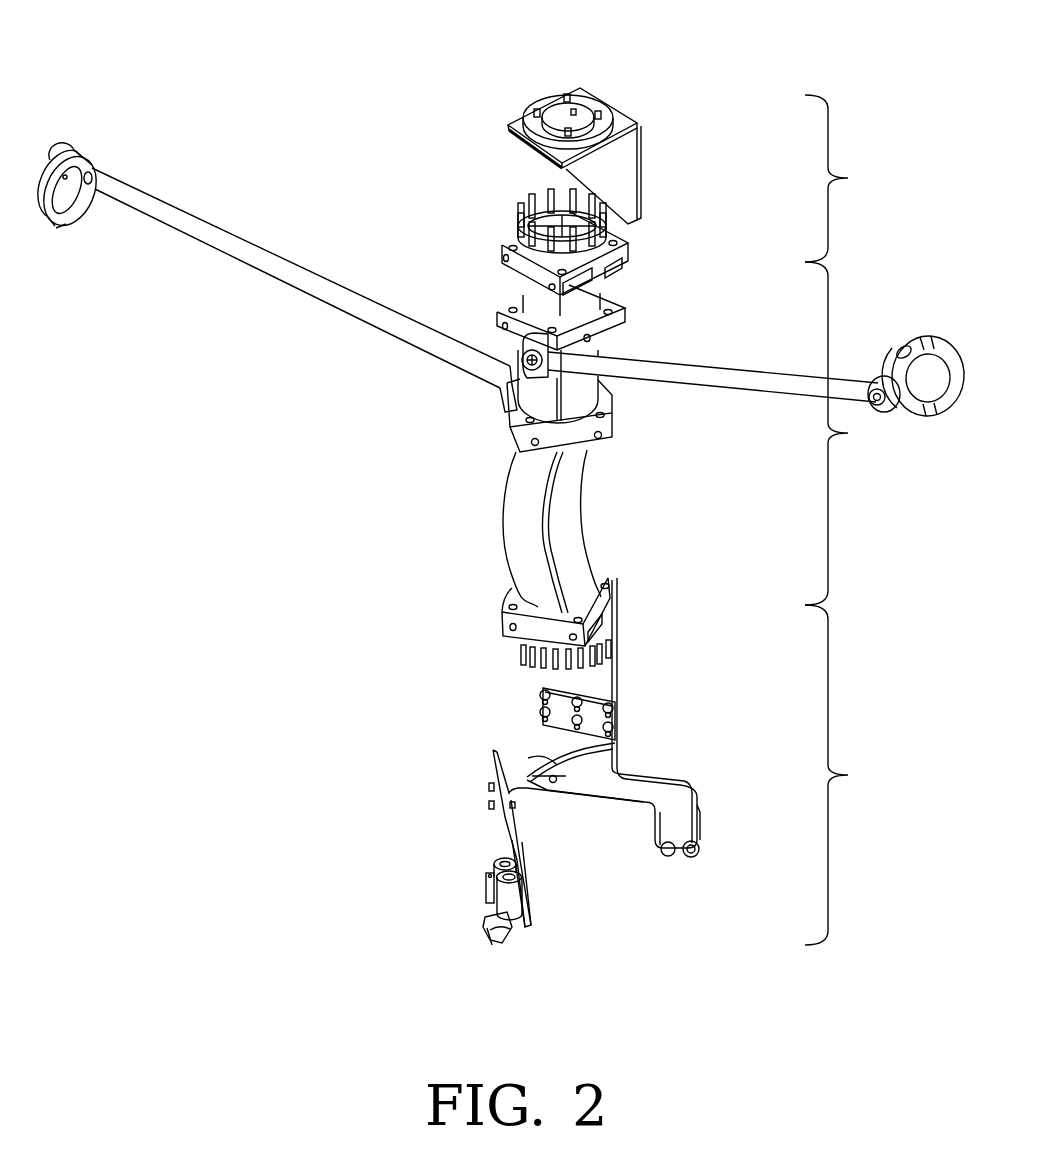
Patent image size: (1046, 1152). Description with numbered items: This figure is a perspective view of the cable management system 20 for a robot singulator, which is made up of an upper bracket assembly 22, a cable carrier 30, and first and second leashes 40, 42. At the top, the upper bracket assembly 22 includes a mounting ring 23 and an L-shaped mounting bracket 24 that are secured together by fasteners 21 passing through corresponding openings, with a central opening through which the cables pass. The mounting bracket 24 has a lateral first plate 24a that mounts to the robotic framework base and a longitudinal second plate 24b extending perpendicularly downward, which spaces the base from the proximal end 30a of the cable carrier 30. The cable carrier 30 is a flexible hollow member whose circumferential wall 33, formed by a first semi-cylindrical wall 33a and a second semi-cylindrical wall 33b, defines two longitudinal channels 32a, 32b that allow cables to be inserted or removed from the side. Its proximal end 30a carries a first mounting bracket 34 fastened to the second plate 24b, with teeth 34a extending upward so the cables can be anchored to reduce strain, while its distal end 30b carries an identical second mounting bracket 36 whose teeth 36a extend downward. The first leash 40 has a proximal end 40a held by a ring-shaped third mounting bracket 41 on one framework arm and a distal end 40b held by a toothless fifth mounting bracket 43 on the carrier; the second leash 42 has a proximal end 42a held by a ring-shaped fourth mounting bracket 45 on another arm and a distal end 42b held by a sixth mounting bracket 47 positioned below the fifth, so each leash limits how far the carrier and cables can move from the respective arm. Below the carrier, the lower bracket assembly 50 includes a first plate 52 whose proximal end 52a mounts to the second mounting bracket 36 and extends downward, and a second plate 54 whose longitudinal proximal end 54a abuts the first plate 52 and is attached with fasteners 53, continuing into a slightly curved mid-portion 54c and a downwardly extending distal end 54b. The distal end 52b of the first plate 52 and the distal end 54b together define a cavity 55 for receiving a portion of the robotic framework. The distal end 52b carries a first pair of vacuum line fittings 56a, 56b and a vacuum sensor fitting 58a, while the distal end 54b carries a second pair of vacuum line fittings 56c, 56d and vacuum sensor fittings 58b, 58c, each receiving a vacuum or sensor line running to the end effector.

The cable management system 20 is at (187, 97).
The fasteners 21 is at (533, 110).
The upper bracket assembly 22 is at (845, 178).
The mounting ring 23 is at (585, 100).
The mounting bracket 24 is at (665, 132).
The first plate 24a is at (515, 135).
The second plate 24b is at (622, 200).
The cable carrier 30 is at (847, 433).
The proximal end 30a is at (628, 278).
The distal end 30b is at (622, 592).
The longitudinal channel 32a is at (560, 210).
The longitudinal channel 32b is at (508, 588).
The circumferential wall 33 is at (587, 500).
The first semi-cylindrical wall 33a is at (515, 502).
The second semi-cylindrical wall 33b is at (590, 567).
The first mounting bracket 34 is at (512, 270).
The teeth 34a is at (522, 227).
The second mounting bracket 36 is at (517, 645).
The teeth 36a is at (527, 657).
The first leash 40 is at (720, 362).
The proximal end 40a is at (882, 385).
The distal end 40b is at (535, 338).
The third mounting bracket 41 is at (930, 338).
The second leash 42 is at (262, 243).
The proximal end 42a is at (72, 152).
The distal end 42b is at (508, 362).
The fifth mounting bracket 43 is at (628, 307).
The fourth mounting bracket 45 is at (82, 208).
The sixth mounting bracket 47 is at (612, 405).
The lower bracket assembly 50 is at (845, 775).
The first plate 52 is at (600, 665).
The proximal end 52a is at (593, 576).
The distal end 52b is at (663, 833).
The fasteners 53 is at (545, 712).
The second plate 54 is at (540, 780).
The proximal end 54a is at (493, 750).
The distal end 54b is at (528, 902).
The mid-portion 54c is at (562, 780).
The cavity 55 is at (612, 883).
The vacuum line fitting 56a is at (700, 852).
The vacuum line fitting 56b is at (670, 848).
The vacuum line fitting 56c is at (487, 948).
The vacuum line fitting 56d is at (488, 918).
The vacuum sensor fitting 58a is at (700, 827).
The vacuum sensor fitting 58b is at (492, 900).
The vacuum sensor fitting 58c is at (493, 877).